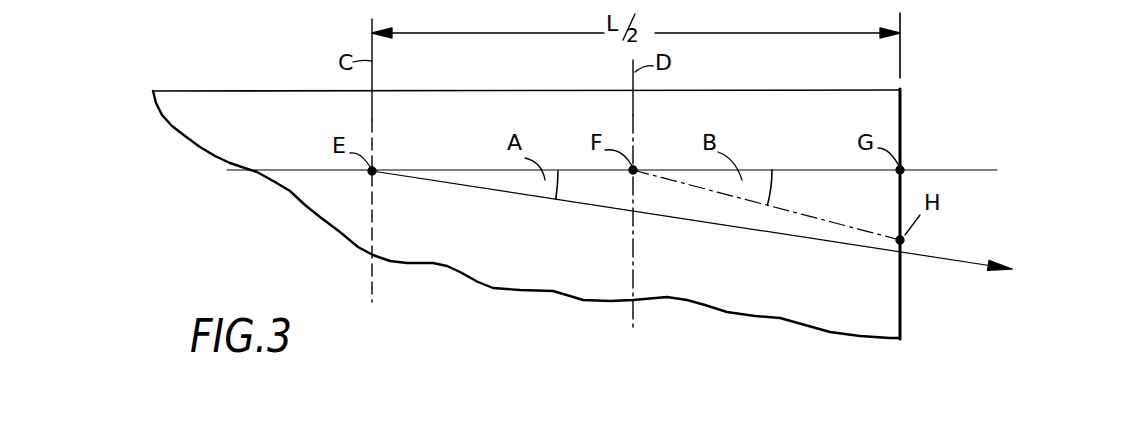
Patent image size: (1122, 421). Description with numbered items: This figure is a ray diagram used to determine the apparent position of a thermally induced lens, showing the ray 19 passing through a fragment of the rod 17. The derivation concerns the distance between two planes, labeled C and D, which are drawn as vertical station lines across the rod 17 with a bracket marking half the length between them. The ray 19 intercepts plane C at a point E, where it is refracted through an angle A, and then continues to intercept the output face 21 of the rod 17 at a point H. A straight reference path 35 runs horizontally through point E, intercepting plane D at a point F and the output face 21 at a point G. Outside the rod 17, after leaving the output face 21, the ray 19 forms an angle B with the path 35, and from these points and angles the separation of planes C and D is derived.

The rod 17 is at (450, 240).
The ray 19 is at (970, 256).
The output face 21 is at (902, 318).
The path 35 is at (995, 171).